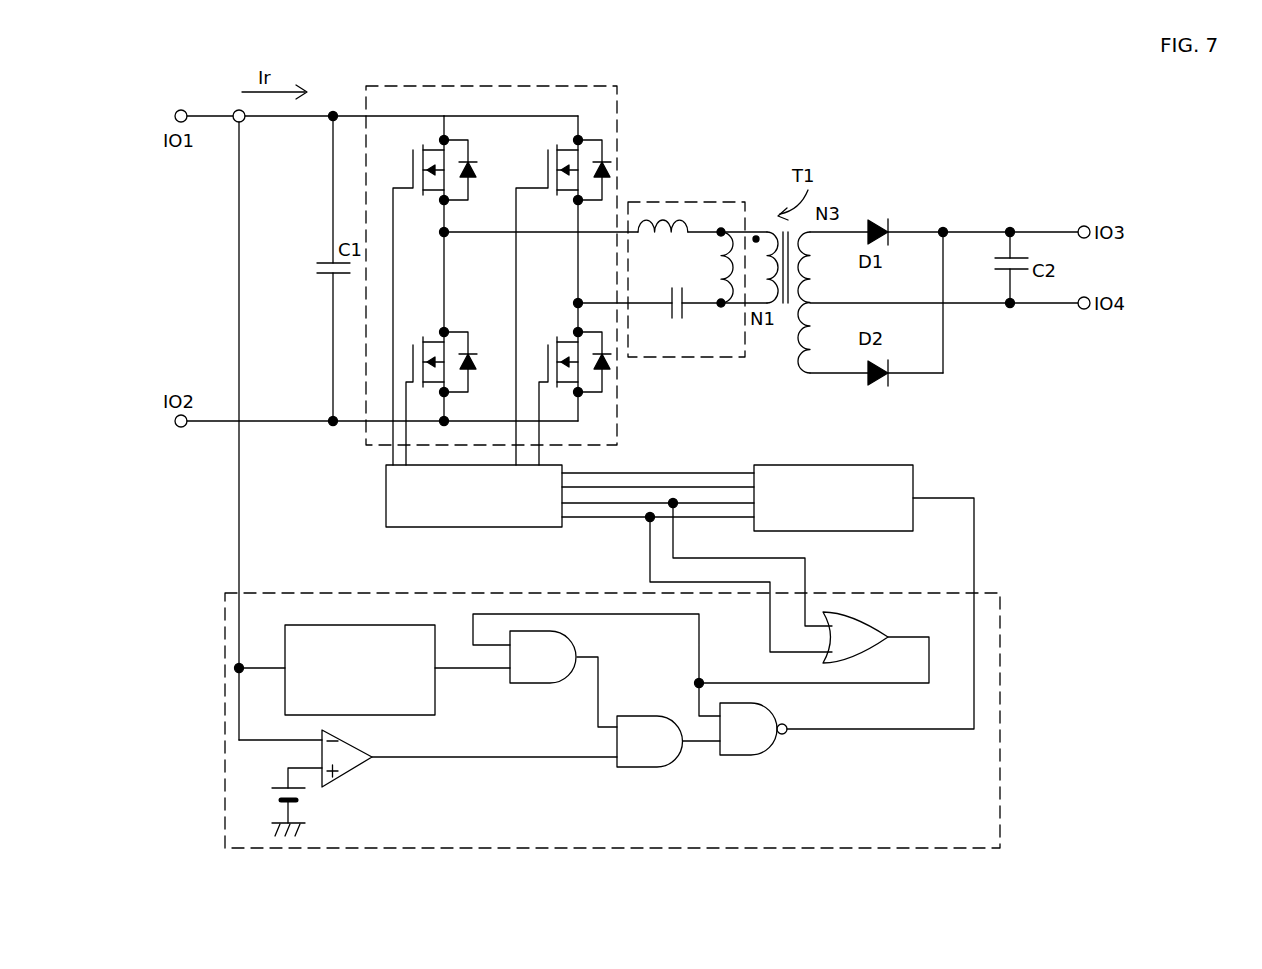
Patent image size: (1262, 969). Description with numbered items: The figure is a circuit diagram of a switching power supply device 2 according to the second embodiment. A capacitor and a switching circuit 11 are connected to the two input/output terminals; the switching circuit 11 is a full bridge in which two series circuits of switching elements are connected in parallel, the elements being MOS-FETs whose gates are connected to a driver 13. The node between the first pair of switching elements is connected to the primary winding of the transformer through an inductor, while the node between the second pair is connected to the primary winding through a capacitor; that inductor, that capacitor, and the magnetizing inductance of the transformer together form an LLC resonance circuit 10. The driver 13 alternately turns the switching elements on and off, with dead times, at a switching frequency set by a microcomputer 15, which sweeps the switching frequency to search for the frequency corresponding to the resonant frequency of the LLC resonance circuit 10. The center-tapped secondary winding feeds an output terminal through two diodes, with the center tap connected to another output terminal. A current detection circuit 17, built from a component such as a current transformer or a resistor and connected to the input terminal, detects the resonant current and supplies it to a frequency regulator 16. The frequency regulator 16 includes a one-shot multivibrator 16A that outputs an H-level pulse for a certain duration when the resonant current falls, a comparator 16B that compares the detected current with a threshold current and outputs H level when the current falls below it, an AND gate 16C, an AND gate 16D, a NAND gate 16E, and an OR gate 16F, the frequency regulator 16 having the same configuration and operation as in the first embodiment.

The switching power supply device 2 is at (898, 150).
The LLC resonance circuit 10 is at (713, 201).
The switching circuit 11 is at (622, 107).
The driver 13 is at (386, 512).
The microcomputer 15 is at (836, 464).
The frequency regulator 16 is at (232, 593).
The one-shot multivibrator 16A is at (333, 623).
The comparator 16B is at (347, 773).
The AND gate 16C is at (508, 686).
The AND gate 16D is at (630, 770).
The NAND gate 16E is at (747, 758).
The OR gate 16F is at (868, 583).
The current detection circuit 17 is at (250, 130).